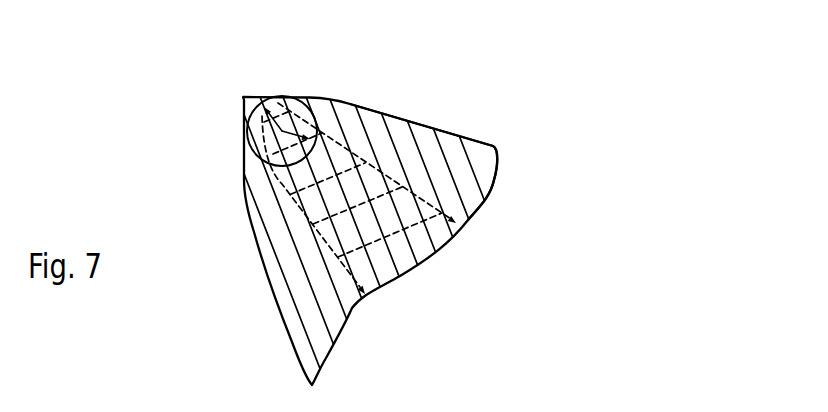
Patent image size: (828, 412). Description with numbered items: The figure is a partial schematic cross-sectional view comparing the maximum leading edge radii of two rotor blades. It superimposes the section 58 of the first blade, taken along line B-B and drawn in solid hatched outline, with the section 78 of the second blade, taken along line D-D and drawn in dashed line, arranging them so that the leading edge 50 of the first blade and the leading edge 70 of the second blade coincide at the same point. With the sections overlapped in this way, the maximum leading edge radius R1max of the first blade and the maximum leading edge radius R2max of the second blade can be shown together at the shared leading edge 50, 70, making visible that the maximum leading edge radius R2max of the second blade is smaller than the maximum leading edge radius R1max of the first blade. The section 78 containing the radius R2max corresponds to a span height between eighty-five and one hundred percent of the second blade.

The leading edge 50 is at (359, 215).
The leading edge 70 is at (243, 97).
The cross-section 58 is at (460, 139).
The cross section 78 is at (405, 197).
The maximum leading edge radius R1max is at (310, 139).
The maximum leading edge radius R2max is at (266, 104).